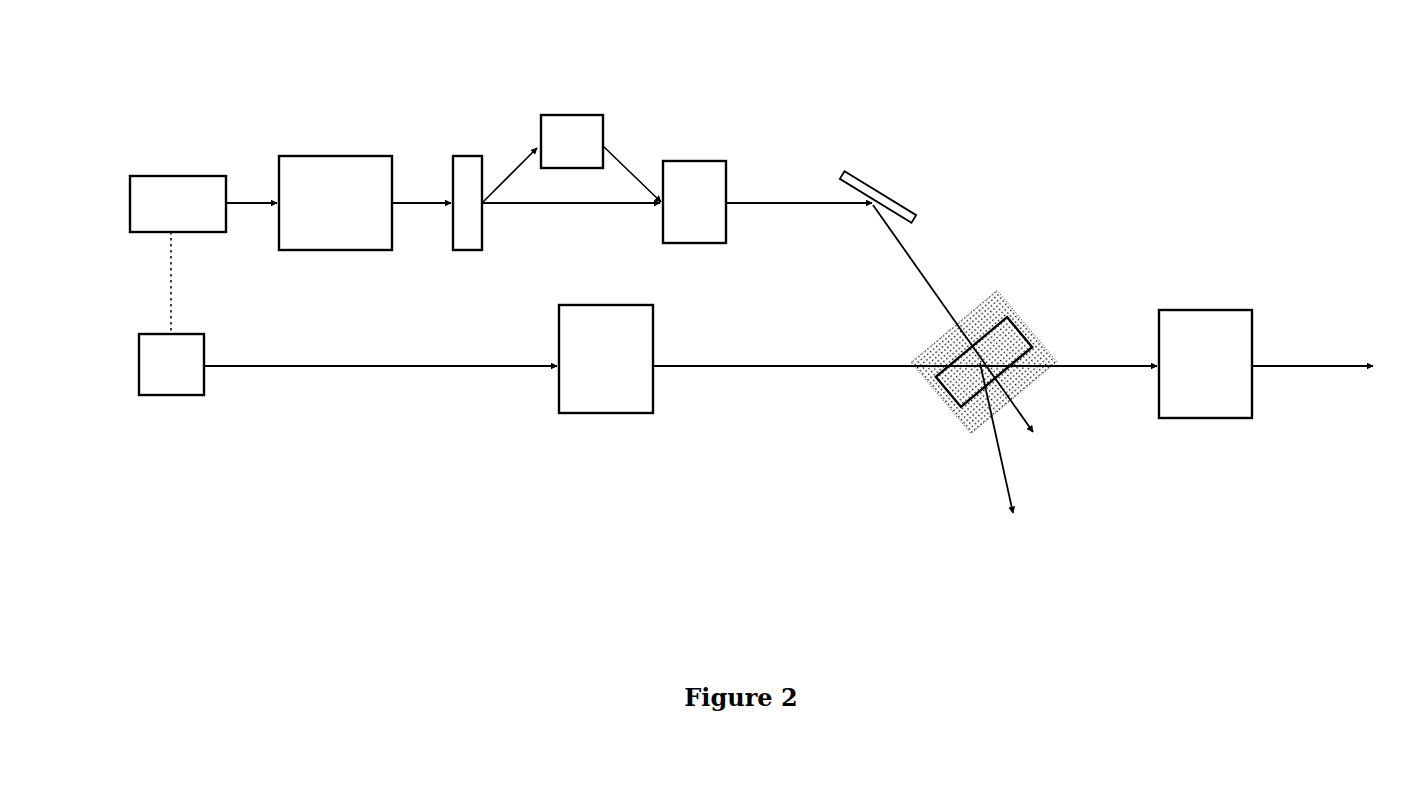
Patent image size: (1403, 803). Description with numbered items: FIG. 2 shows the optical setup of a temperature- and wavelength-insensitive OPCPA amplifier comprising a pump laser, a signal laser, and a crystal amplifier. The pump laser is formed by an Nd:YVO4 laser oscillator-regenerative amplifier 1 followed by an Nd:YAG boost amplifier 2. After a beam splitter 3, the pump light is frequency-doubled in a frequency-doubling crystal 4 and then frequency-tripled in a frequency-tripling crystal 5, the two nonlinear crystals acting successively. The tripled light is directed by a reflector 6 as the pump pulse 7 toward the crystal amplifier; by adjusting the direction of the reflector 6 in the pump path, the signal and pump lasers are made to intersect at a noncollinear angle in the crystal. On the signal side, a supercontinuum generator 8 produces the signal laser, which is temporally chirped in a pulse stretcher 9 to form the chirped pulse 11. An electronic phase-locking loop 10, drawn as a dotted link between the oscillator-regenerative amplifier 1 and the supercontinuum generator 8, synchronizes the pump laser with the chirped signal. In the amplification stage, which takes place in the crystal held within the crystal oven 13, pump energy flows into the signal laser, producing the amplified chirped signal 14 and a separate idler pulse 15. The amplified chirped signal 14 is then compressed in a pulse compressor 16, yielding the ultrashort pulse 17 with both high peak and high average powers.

The Nd:YVO4 laser oscillator-regenerative amplifier 1 is at (192, 165).
The Nd:YAG boost amplifier 2 is at (337, 162).
The beam splitter 3 is at (486, 162).
The frequency-doubling crystal 4 is at (598, 103).
The frequency-tripling crystal 5 is at (717, 163).
The reflector 6 is at (897, 163).
The pump pulse 7 is at (953, 314).
The supercontinuum generator 8 is at (194, 393).
The pulse stretcher 9 is at (618, 390).
The electronic phase-locking loop 10 is at (214, 283).
The chirped pulse 11 is at (905, 326).
The crystal oven 13 is at (1004, 331).
The amplified chirped signal 14 is at (1108, 394).
The idler pulse 15 is at (966, 450).
The pulse compressor 16 is at (1208, 323).
The ultrashort pulse with both high peak and high average powers 17 is at (1312, 326).